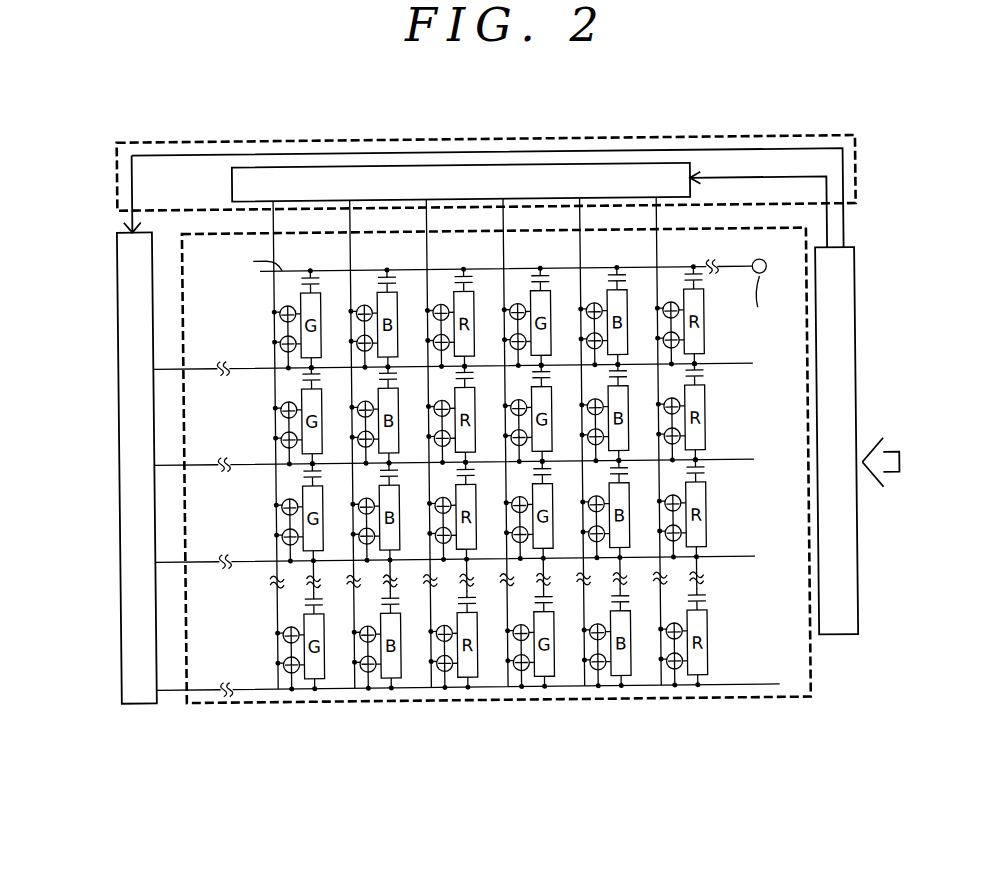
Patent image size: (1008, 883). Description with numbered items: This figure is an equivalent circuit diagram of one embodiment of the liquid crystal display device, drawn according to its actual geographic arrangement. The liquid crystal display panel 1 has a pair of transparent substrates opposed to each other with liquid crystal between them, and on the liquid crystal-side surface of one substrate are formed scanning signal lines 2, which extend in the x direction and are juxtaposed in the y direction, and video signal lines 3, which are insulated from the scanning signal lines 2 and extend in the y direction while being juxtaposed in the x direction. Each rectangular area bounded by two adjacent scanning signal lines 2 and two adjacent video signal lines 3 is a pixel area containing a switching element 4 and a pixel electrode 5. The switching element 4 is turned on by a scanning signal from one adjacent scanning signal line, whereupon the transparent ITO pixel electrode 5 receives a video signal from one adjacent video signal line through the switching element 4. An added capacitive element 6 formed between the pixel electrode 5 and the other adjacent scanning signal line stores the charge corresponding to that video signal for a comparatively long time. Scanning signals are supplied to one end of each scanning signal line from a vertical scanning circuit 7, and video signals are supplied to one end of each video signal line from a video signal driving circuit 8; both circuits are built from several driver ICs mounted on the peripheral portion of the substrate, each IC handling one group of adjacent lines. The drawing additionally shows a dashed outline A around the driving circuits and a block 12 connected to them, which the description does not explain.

The display device A is at (134, 126).
The liquid crystal display panel 1 is at (627, 702).
The scanning signal lines 2 is at (168, 461).
The video signal lines 3 is at (273, 214).
The switching element 4 is at (289, 303).
The pixel electrode 5 is at (282, 333).
The added capacitive element 6 is at (303, 286).
The vertical scanning circuit 7 is at (118, 645).
The video signal driving circuit 8 is at (519, 165).
The controller 12 is at (837, 642).